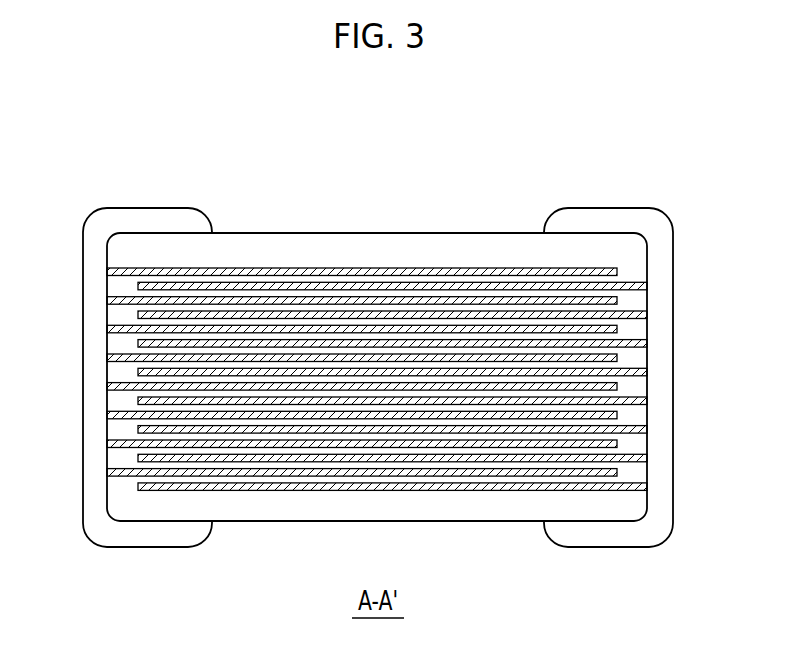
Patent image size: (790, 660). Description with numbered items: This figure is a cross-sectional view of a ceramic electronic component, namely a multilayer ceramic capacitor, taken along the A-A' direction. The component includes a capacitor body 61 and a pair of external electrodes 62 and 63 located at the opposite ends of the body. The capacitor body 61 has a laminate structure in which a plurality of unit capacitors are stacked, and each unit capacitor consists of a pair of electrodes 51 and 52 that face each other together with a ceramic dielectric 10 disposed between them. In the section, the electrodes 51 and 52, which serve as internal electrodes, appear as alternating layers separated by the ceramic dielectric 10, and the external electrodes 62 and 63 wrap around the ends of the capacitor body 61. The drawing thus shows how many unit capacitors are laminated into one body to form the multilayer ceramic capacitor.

The ceramic dielectric 10 is at (620, 280).
The electrode 51 is at (628, 320).
The electrode 52 is at (127, 298).
The capacitor body 61 is at (363, 130).
The external electrode 62 is at (148, 217).
The external electrode 63 is at (604, 218).